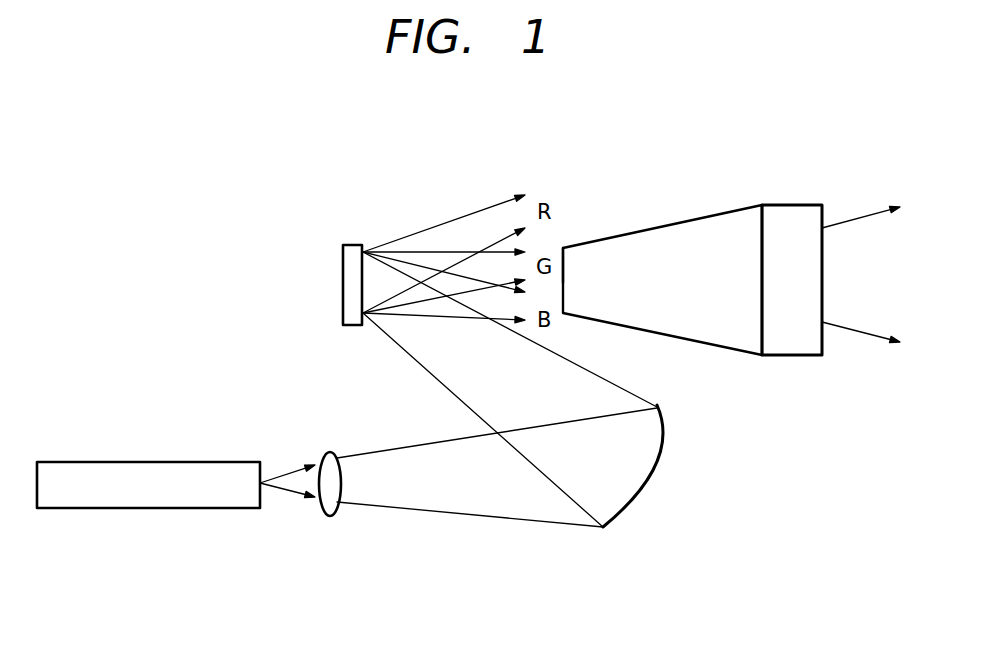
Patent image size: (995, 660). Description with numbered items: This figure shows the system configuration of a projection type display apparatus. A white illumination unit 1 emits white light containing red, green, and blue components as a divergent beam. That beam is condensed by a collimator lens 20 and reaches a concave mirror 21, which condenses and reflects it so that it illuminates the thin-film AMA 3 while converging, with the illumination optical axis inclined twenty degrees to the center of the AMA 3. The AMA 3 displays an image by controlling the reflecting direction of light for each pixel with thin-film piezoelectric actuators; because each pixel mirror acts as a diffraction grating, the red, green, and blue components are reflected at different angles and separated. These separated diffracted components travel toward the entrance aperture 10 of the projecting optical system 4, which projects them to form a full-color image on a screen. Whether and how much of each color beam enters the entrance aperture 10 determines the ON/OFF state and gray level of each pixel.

The white illumination unit 1 is at (108, 462).
The collimator lens 20 is at (333, 518).
The concave mirror 21 is at (638, 498).
The thin-film AMA 3 is at (352, 245).
The projecting optical system 4 is at (645, 227).
The entrance aperture 10 is at (563, 283).